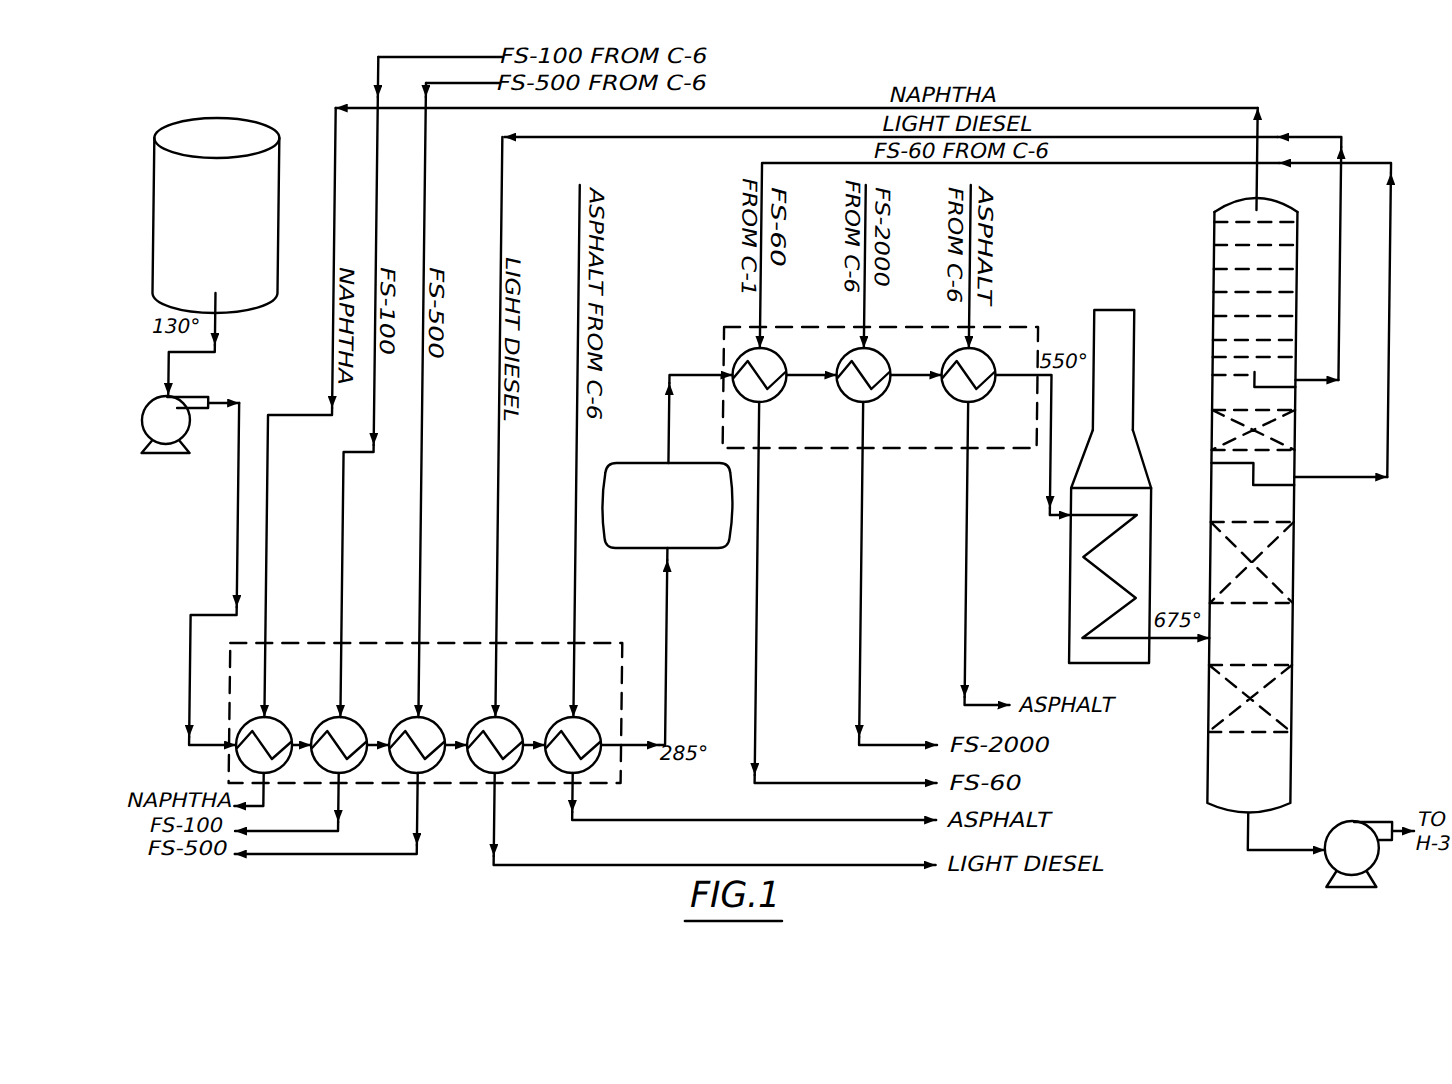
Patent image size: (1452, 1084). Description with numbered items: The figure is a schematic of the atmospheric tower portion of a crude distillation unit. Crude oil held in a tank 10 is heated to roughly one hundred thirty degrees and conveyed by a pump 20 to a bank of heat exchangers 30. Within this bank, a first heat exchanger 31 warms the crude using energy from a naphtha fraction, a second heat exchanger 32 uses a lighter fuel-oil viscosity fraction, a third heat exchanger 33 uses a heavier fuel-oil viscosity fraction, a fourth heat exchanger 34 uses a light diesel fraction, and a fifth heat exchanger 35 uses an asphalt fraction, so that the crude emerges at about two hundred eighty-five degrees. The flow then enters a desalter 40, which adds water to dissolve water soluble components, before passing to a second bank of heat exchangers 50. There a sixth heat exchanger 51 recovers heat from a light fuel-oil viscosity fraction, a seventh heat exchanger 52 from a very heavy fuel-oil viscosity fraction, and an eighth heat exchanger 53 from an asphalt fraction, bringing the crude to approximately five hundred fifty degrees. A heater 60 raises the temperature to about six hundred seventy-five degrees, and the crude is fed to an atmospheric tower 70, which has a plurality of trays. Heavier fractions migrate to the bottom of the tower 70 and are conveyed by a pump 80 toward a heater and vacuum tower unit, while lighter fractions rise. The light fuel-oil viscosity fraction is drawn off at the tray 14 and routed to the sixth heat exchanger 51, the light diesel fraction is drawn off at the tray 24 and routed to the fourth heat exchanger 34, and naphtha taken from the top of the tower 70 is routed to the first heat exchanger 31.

The tank 10 is at (231, 239).
The pump 20 is at (167, 443).
The bank of heat exchangers 30 is at (612, 643).
The first heat exchanger 31 is at (280, 721).
The second heat exchanger 32 is at (355, 721).
The third heat exchanger 33 is at (433, 721).
The fourth heat exchanger 34 is at (511, 721).
The fifth heat exchanger 35 is at (589, 721).
The desalter 40 is at (681, 535).
The second bank of heat exchangers 50 is at (722, 327).
The sixth heat exchanger 51 is at (783, 387).
The seventh heat exchanger 52 is at (887, 387).
The eighth heat exchanger 53 is at (992, 387).
The heater 60 is at (1071, 585).
The atmospheric tower 70 is at (1220, 505).
The pump 80 is at (1340, 863).
The tray 14 is at (1284, 482).
The tray 24 is at (1285, 384).